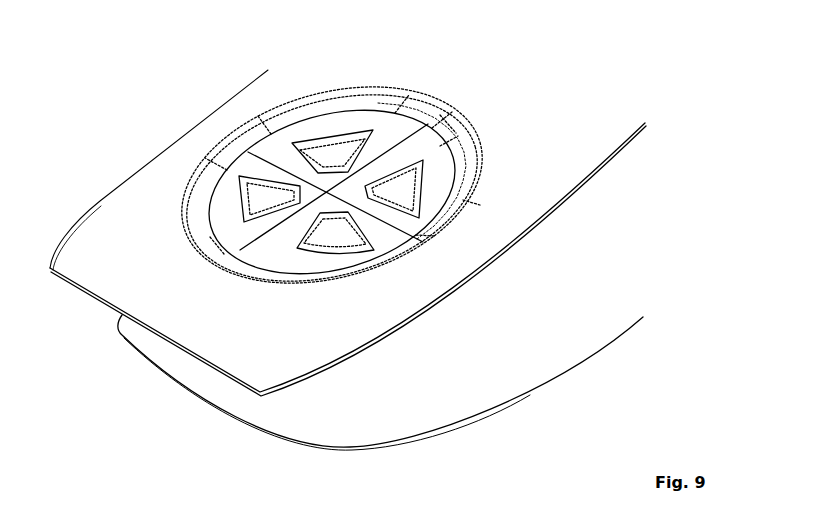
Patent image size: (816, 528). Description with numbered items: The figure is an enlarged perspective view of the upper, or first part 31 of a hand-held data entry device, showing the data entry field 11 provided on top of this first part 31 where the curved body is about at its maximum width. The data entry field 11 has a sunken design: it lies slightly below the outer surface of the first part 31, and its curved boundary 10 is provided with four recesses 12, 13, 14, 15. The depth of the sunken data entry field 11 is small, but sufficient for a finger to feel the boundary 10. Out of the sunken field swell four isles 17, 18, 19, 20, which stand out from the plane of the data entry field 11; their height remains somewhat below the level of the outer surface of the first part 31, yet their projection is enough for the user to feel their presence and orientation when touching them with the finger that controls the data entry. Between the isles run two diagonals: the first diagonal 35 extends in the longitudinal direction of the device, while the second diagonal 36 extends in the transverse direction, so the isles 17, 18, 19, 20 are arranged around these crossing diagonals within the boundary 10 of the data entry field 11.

The curved boundary 10 is at (288, 105).
The data entry field 11 is at (280, 255).
The recess 12 is at (434, 100).
The recess 13 is at (439, 243).
The recess 14 is at (227, 258).
The recess 15 is at (219, 138).
The isle 17 is at (412, 180).
The isle 18 is at (333, 237).
The isle 19 is at (258, 188).
The isle 20 is at (332, 139).
The first part 31 is at (143, 183).
The first diagonal 35 is at (443, 124).
The second diagonal 36 is at (452, 228).